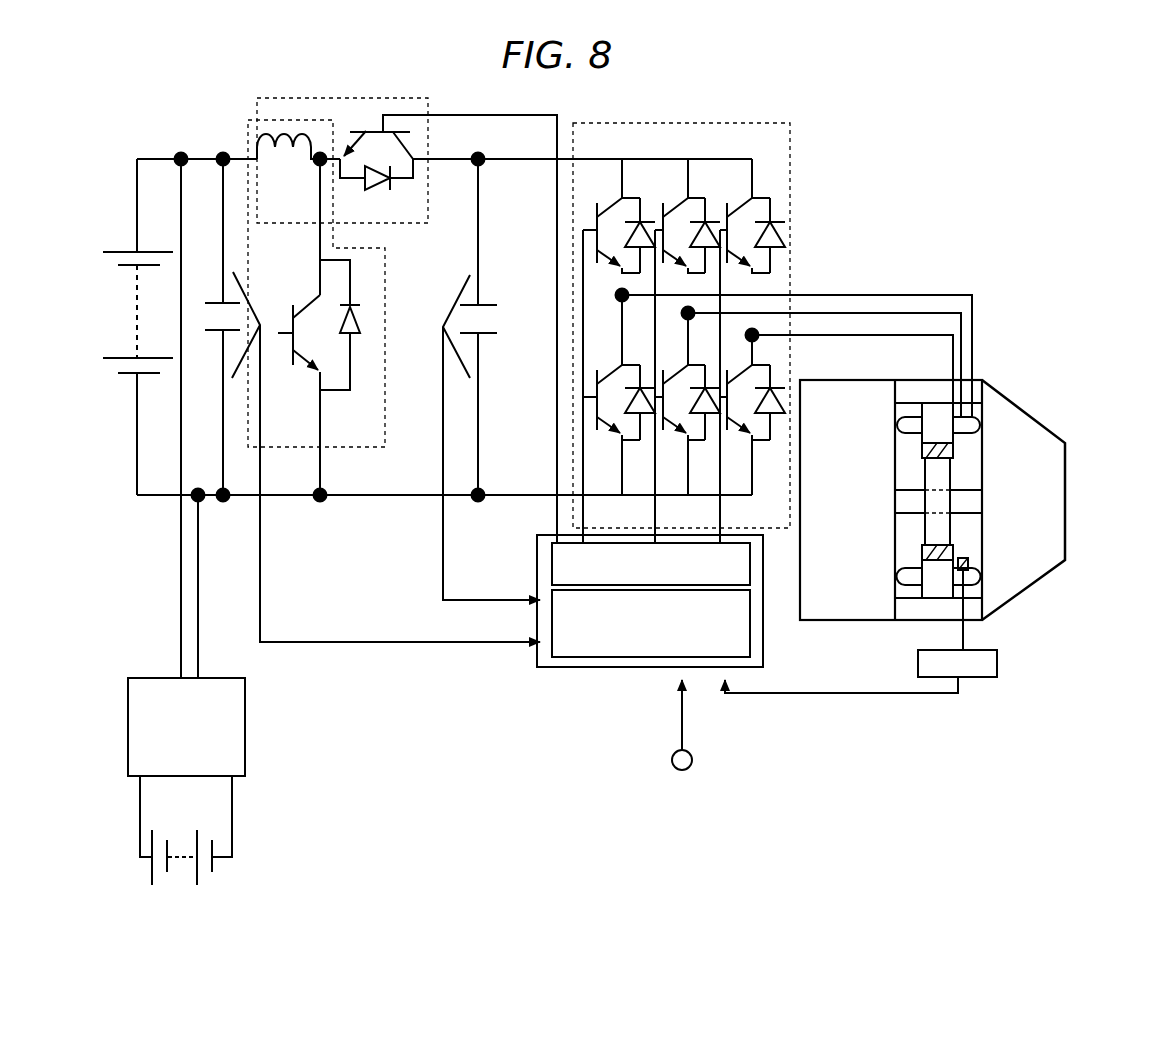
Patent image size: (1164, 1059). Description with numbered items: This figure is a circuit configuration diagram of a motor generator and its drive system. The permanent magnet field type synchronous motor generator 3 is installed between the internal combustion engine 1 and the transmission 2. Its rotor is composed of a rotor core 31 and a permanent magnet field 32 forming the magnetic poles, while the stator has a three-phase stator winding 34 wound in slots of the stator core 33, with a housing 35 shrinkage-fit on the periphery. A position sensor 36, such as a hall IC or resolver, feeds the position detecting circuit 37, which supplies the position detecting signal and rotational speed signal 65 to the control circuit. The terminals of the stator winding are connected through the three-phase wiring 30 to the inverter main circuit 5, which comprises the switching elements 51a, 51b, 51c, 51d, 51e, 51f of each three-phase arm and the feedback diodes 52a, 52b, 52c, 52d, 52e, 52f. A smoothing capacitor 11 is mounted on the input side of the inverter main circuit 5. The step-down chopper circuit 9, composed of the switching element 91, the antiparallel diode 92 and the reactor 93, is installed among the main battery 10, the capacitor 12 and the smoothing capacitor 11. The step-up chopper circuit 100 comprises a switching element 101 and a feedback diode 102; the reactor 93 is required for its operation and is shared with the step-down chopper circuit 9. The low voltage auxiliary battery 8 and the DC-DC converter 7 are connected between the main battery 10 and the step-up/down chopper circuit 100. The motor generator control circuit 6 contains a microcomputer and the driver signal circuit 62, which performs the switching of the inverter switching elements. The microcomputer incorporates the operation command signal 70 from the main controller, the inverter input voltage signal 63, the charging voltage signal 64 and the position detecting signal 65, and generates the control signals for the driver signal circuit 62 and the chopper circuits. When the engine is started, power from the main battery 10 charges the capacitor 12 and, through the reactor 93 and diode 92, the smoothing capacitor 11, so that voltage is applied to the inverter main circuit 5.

The internal combustion engine 1 is at (848, 605).
The transmission 2 is at (1030, 565).
The motor generator 3 is at (963, 204).
The inverter main circuit 5 is at (792, 130).
The motor generator control circuit 6 is at (565, 667).
The DC-DC converter 7 is at (248, 725).
The auxiliary battery 8 is at (215, 865).
The step-down chopper circuit 9 is at (412, 98).
The main battery 10 is at (125, 378).
The smoothing capacitor 11 is at (490, 303).
The capacitor 12 is at (215, 300).
The three-phase power cable 30 is at (866, 297).
The rotor core 31 is at (938, 472).
The permanent magnet field 32 is at (950, 452).
The stator core 33 is at (975, 382).
The three-phase stator winding 34 is at (912, 420).
The housing 35 is at (940, 385).
The position sensor 36 is at (968, 568).
The position detecting circuit 37 is at (975, 677).
The switching element 51a is at (742, 218).
The switching element 51b is at (666, 212).
The switching element 51c is at (597, 212).
The switching element 51d is at (733, 430).
The switching element 51e is at (668, 430).
The switching element 51f is at (603, 430).
The feedback diode 52a is at (787, 240).
The feedback diode 52b is at (712, 225).
The feedback diode 52c is at (636, 212).
The feedback diode 52d is at (773, 440).
The feedback diode 52e is at (707, 438).
The feedback diode 52f is at (641, 440).
The driver signal circuit 62 is at (750, 570).
The inverter input voltage signal 63 is at (443, 545).
The charging voltage signal 64 is at (425, 642).
The position detecting signal 65 is at (640, 657).
The operation command signal 70 is at (700, 770).
The switching element 91 is at (378, 130).
The diode 92 is at (355, 165).
The reactor 93 is at (263, 133).
The step-up chopper circuit 100 is at (285, 450).
The switching element 101 is at (368, 285).
The feedback diode 102 is at (360, 338).